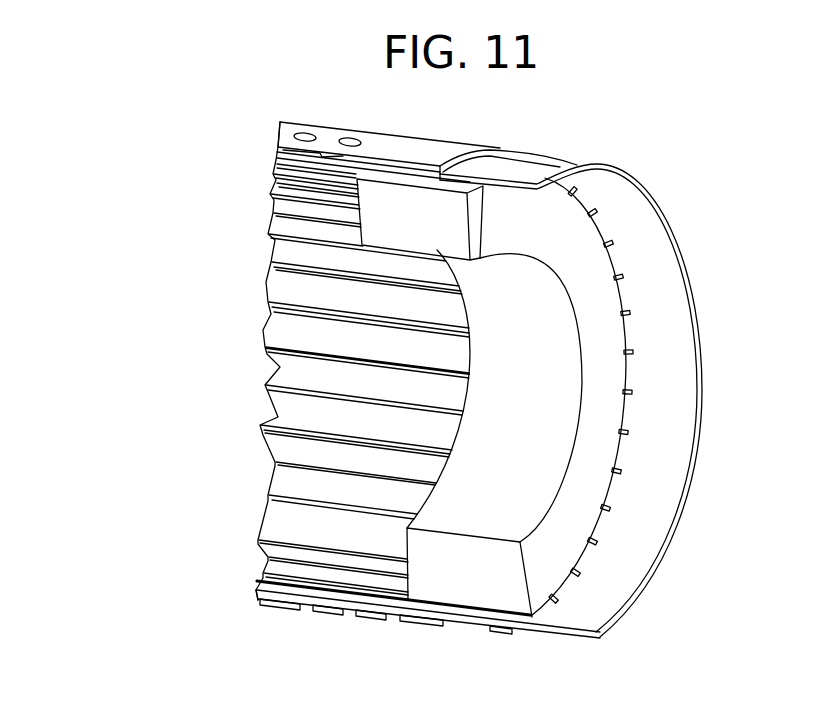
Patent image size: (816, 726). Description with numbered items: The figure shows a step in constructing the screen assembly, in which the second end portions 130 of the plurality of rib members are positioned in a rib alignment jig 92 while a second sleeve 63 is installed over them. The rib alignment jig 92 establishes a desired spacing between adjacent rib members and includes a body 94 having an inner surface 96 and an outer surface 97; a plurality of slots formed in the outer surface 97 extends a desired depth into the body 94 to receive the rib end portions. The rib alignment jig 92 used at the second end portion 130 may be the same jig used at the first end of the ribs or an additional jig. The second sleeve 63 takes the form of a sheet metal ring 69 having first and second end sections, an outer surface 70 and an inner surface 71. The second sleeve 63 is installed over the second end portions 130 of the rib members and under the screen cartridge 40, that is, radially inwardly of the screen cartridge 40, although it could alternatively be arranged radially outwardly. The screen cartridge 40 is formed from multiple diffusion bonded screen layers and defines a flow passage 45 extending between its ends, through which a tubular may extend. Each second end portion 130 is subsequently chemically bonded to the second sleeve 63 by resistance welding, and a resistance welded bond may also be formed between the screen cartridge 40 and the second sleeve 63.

The screen cartridge 40 is at (421, 133).
The outer surface 97 is at (378, 175).
The outer surface 70 is at (515, 163).
The second sleeve 63 is at (666, 185).
The flow passage 45 is at (514, 327).
The rib alignment jig 92 is at (644, 330).
The inner surface 71 is at (677, 365).
The body 94 is at (604, 450).
The inner surface 96 is at (528, 456).
The sheet metal ring 69 is at (638, 613).
The second end portion 130 is at (490, 613).